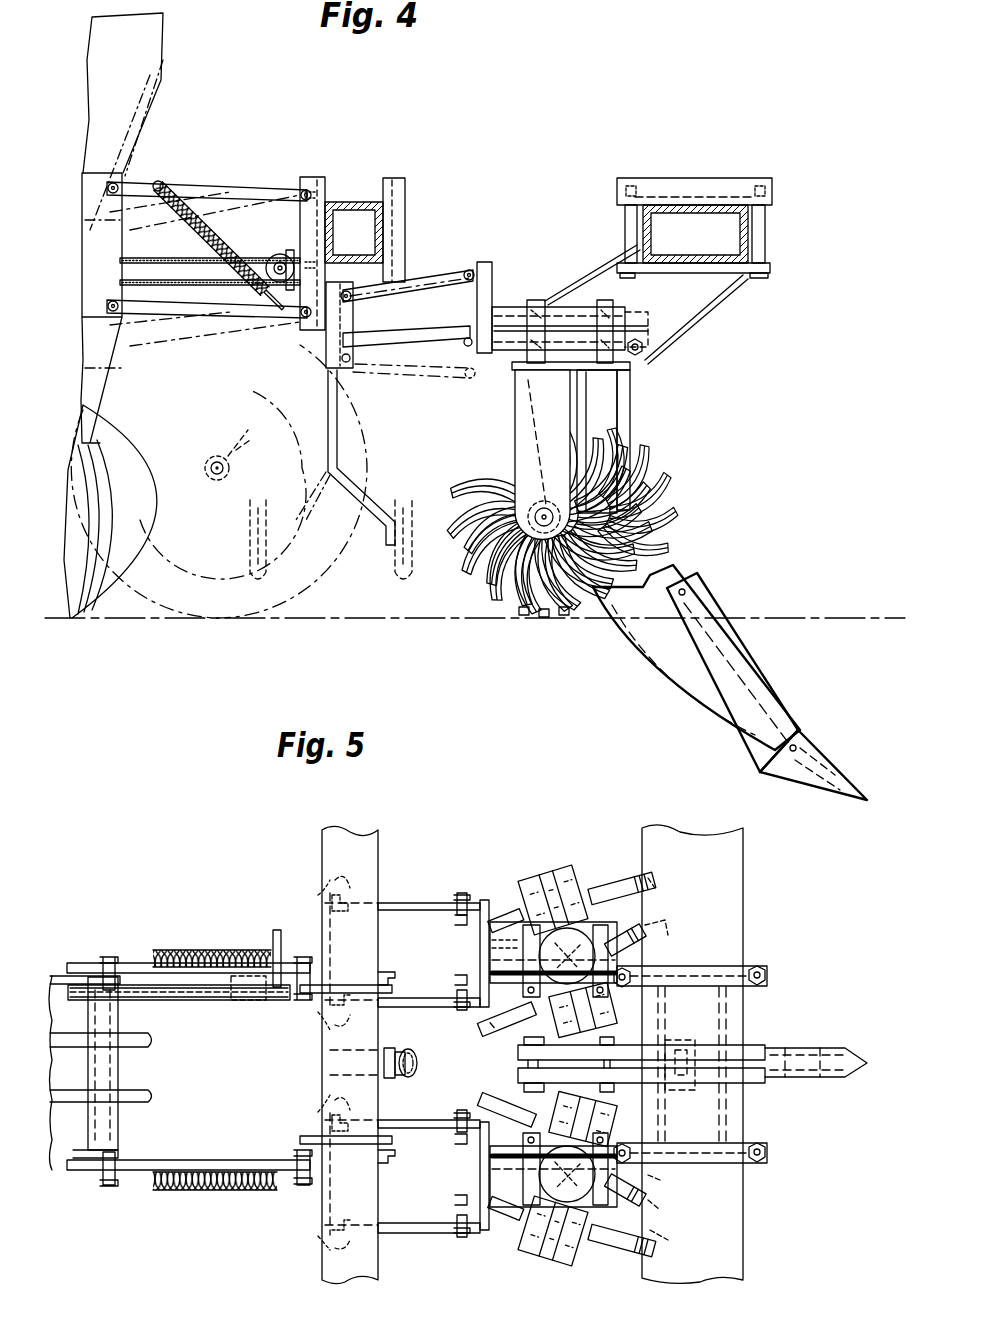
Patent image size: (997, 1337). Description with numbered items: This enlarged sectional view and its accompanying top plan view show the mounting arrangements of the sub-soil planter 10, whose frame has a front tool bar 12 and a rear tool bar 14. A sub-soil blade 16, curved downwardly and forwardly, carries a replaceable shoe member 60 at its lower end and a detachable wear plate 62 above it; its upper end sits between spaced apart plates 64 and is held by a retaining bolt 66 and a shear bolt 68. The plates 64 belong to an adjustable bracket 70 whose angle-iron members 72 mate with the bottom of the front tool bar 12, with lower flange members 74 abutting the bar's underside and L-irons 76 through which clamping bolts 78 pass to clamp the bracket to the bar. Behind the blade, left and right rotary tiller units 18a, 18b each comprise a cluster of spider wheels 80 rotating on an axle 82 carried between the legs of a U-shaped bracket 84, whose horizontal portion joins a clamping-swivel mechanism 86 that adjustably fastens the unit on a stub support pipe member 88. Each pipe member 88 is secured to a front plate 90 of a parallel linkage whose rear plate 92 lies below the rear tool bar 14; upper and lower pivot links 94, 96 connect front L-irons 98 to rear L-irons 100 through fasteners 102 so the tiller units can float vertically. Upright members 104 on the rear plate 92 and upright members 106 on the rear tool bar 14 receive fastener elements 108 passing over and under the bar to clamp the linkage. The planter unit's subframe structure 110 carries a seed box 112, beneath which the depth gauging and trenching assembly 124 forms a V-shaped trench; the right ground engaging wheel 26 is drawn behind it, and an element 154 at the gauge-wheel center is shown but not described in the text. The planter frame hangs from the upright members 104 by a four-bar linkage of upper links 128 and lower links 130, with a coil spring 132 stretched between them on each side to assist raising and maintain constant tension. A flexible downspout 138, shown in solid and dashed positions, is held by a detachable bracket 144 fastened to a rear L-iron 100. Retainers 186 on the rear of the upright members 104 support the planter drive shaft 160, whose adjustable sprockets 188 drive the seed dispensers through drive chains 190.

In FIG. 4, the sub-soil planter 10 is at (452, 122).
In FIG. 5, the sub-soil planter 10 is at (250, 842).
In FIG. 4, the front tool bar 12 is at (712, 222).
In FIG. 5, the front tool bar 12 is at (680, 828).
In FIG. 4, the rear tool bar 14 is at (374, 236).
In FIG. 5, the rear tool bar 14 is at (360, 828).
In FIG. 4, the sub-soil blade 16 is at (632, 652).
In FIG. 5, the sub-soil blade 16 is at (780, 1048).
In FIG. 5, the left rotary tiller unit 18a is at (540, 858).
In FIG. 4, the right rotary tiller unit 18b is at (486, 430).
In FIG. 5, the right rotary tiller unit 18b is at (496, 1292).
In FIG. 4, the right ground engaging wheel 26 is at (302, 602).
In FIG. 4, the shoe member 60 is at (820, 755).
In FIG. 4, the wear plate 62 is at (742, 662).
In FIG. 5, the wear plate 62 is at (835, 1048).
In FIG. 4, the spaced apart plates 64 is at (696, 319).
In FIG. 5, the spaced apart plates 64 is at (516, 1052).
In FIG. 5, the retaining bolt 66 is at (522, 1091).
In FIG. 4, the shear bolt 68 is at (648, 354).
In FIG. 5, the shear bolt 68 is at (630, 1040).
In FIG. 4, the adjustable bracket 70 is at (792, 232).
In FIG. 4, the angle-iron members 72 is at (632, 248).
In FIG. 5, the angle-iron members 72 is at (745, 1014).
In FIG. 4, the lower flange members 74 is at (735, 278).
In FIG. 4, the L-irons 76 is at (700, 178).
In FIG. 5, the L-irons 76 is at (692, 966).
In FIG. 4, the bolt 78 is at (625, 214).
In FIG. 5, the bolt 78 is at (760, 965).
In FIG. 4, the spider wheels 80 is at (658, 470).
In FIG. 5, the spider wheels 80 is at (592, 888).
In FIG. 4, the axle 82 is at (548, 498).
In FIG. 4, the U-shaped bracket 84 is at (528, 402).
In FIG. 5, the U-shaped bracket 84 is at (558, 872).
In FIG. 4, the clamping-swivel mechanism 86 is at (572, 322).
In FIG. 5, the clamping-swivel mechanism 86 is at (612, 916).
In FIG. 4, the stub support pipe member 88 is at (625, 335).
In FIG. 5, the stub support pipe member 88 is at (495, 1258).
In FIG. 4, the front plate 90 is at (491, 282).
In FIG. 5, the front plate 90 is at (475, 955).
In FIG. 4, the rear plate 92 is at (326, 360).
In FIG. 5, the rear plate 92 is at (340, 952).
In FIG. 4, the upper pivot link 94 is at (465, 265).
In FIG. 5, the upper pivot link 94 is at (442, 902).
In FIG. 4, the lower pivot link 96 is at (412, 374).
In FIG. 4, the front L-irons 98 is at (460, 323).
In FIG. 5, the front L-irons 98 is at (470, 905).
In FIG. 4, the rear L-irons 100 is at (350, 300).
In FIG. 5, the rear L-irons 100 is at (330, 890).
In FIG. 5, the fasteners 102 is at (468, 1025).
In FIG. 4, the upright members 104 is at (312, 178).
In FIG. 5, the upright members 104 is at (312, 1003).
In FIG. 4, the upright members 106 is at (402, 180).
In FIG. 5, the upright members 106 is at (388, 972).
In FIG. 4, the fastener elements 108 is at (354, 200).
In FIG. 5, the fastener elements 108 is at (350, 968).
In FIG. 4, the subframe structure 110 is at (82, 249).
In FIG. 4, the seed box 112 is at (123, 121).
In FIG. 4, the depth gauging and trenching assembly 124 is at (64, 480).
In FIG. 5, the depth gauging and trenching assembly 124 is at (148, 1073).
In FIG. 4, the upper links 128 is at (245, 182).
In FIG. 5, the upper links 128 is at (130, 962).
In FIG. 4, the lower links 130 is at (175, 312).
In FIG. 4, the coil springs 132 is at (198, 240).
In FIG. 5, the coil springs 132 is at (200, 950).
In FIG. 4, the flexible downspouts 138 is at (414, 532).
In FIG. 5, the flexible downspouts 138 is at (430, 1063).
In FIG. 4, the bracket 144 is at (340, 458).
In FIG. 5, the bracket 144 is at (386, 1078).
In FIG. 4, the hub 154 is at (244, 434).
In FIG. 4, the planter drive shaft 160 is at (285, 255).
In FIG. 5, the planter drive shaft 160 is at (275, 930).
In FIG. 4, the retainers 186 is at (298, 190).
In FIG. 5, the retainers 186 is at (282, 950).
In FIG. 4, the sprockets 188 is at (270, 258).
In FIG. 5, the sprockets 188 is at (265, 1000).
In FIG. 4, the drive chains 190 is at (202, 275).
In FIG. 5, the drive chains 190 is at (190, 1000).